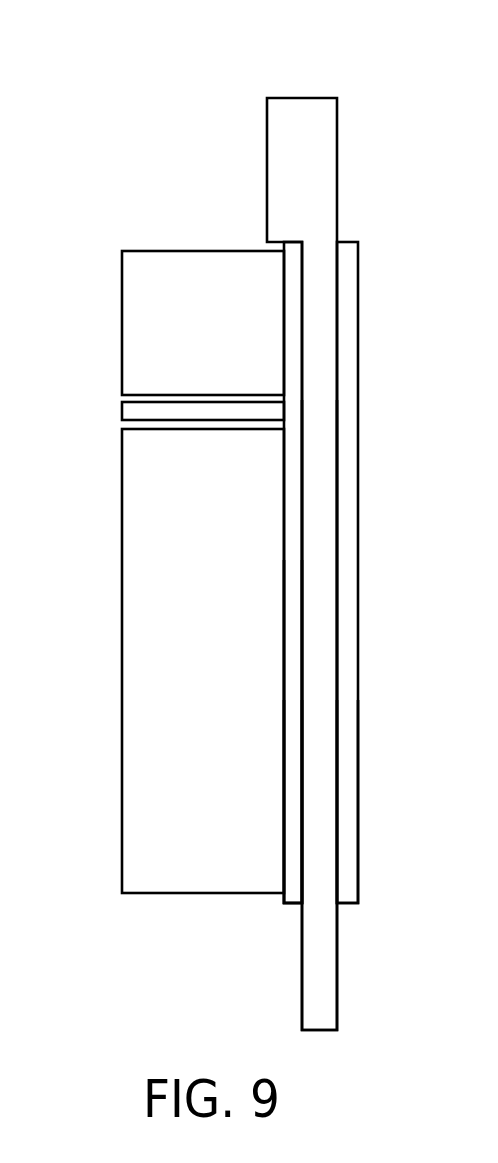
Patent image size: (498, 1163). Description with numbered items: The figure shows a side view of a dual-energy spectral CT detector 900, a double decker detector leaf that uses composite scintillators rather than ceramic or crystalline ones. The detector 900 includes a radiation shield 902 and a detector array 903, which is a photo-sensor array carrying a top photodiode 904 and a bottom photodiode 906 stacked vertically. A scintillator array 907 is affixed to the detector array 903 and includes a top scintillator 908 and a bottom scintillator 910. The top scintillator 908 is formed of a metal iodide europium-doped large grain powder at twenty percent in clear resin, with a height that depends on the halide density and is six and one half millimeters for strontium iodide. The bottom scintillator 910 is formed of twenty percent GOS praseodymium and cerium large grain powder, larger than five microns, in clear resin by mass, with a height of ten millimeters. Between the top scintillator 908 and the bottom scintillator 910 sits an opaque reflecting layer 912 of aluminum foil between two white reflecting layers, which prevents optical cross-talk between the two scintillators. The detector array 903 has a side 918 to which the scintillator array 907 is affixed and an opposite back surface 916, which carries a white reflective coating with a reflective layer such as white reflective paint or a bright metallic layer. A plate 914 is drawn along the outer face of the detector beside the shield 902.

The dual-energy spectral CT detector 900 is at (78, 96).
The radiation shield 902 is at (338, 201).
The detector array 903 is at (320, 456).
The top photodiode 904 is at (284, 325).
The bottom photodiode 906 is at (284, 633).
The scintillator array 907 is at (124, 218).
The top scintillator 908 is at (138, 311).
The bottom scintillator 910 is at (138, 489).
The opaque reflecting layer 912 is at (122, 411).
The rear plate 914 is at (347, 585).
The back surface 916 is at (339, 762).
The side 918 is at (284, 729).